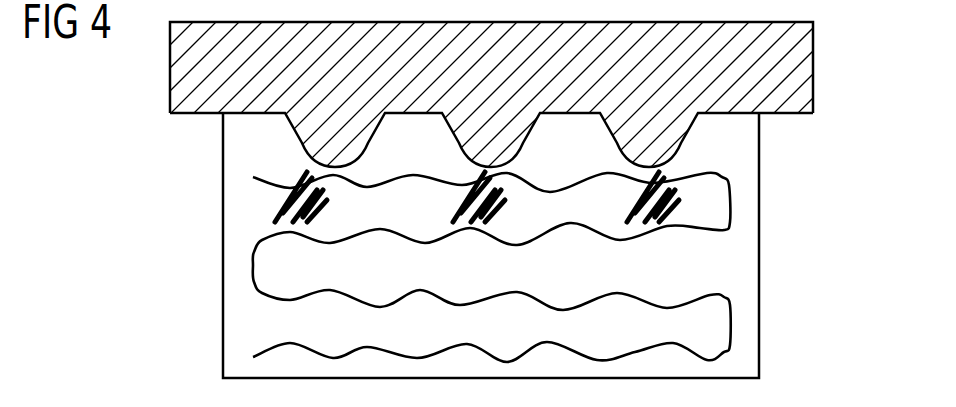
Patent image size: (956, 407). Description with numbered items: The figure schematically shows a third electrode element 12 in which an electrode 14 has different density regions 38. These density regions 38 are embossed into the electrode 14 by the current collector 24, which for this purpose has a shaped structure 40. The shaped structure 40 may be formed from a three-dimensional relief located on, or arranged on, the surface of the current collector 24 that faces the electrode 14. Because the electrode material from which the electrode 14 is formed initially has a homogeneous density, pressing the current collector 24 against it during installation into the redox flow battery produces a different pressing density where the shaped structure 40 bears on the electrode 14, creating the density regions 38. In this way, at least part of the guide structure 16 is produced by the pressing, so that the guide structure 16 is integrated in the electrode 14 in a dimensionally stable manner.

The third electrode element 12 is at (146, 177).
The electrode 14 is at (745, 322).
The guide structure 16 is at (612, 253).
The current collector 24 is at (800, 66).
The density regions 38 is at (449, 209).
The shaped structure 40 is at (699, 145).